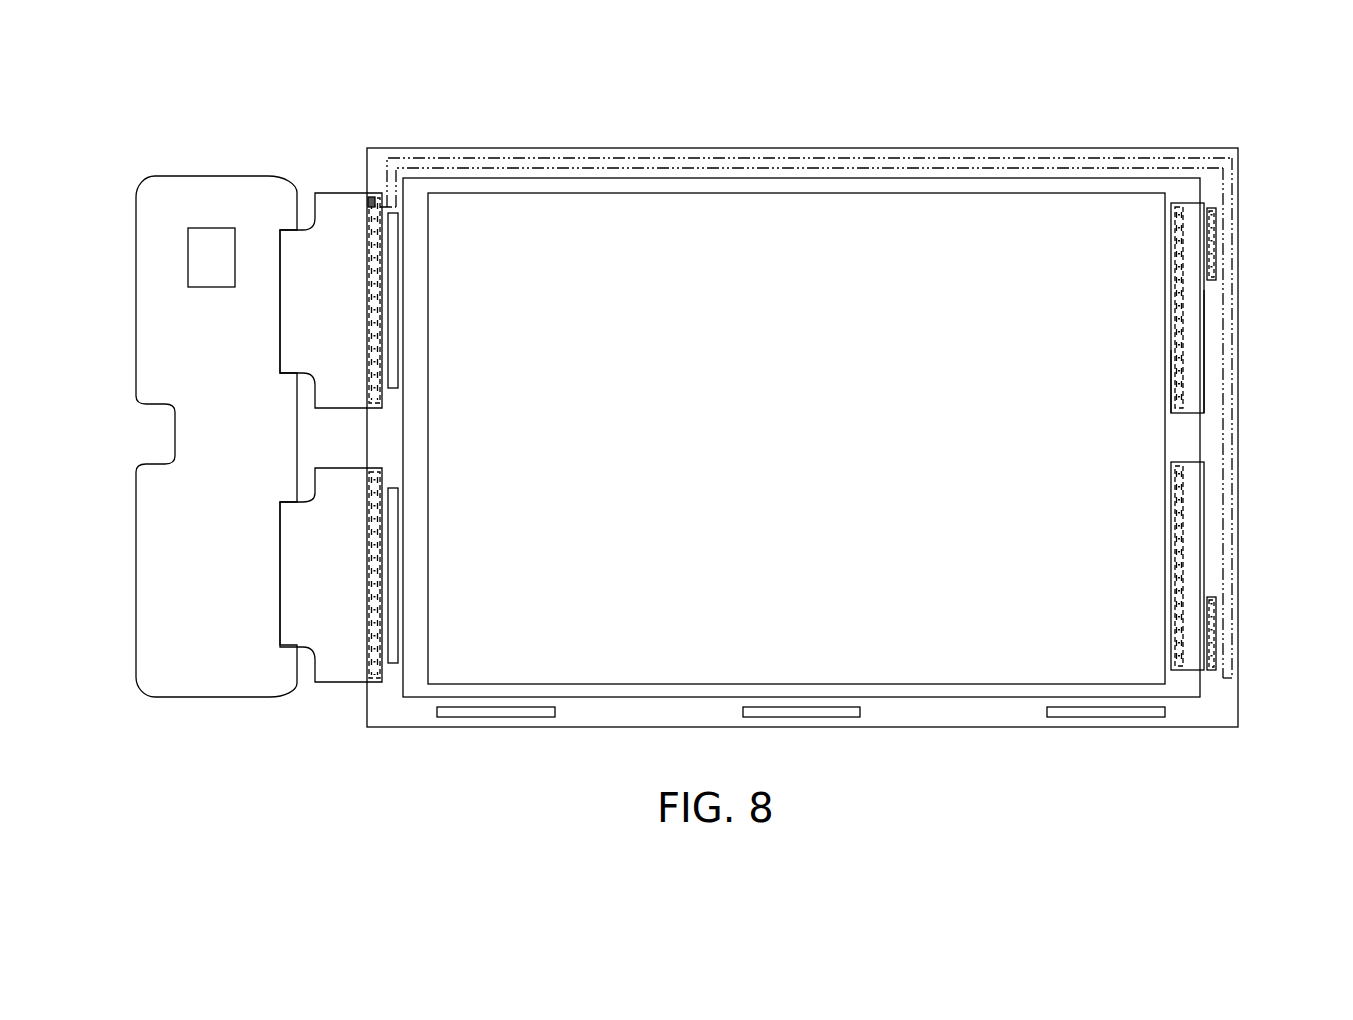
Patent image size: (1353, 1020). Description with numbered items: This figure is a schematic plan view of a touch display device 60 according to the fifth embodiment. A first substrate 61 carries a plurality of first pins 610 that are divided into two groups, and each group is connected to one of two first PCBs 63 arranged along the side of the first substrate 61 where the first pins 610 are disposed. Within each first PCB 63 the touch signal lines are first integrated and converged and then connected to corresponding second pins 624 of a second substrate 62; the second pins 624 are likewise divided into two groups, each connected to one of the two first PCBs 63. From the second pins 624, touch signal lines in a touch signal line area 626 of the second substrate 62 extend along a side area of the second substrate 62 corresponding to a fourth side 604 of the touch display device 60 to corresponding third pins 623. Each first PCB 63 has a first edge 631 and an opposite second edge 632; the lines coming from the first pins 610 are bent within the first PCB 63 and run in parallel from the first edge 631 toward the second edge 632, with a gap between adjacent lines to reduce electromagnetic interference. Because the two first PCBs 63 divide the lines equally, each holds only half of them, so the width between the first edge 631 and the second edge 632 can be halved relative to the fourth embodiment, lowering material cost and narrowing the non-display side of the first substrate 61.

The touch display device 60 is at (640, 63).
The fourth side 604 is at (548, 130).
The touch signal line area 626 is at (734, 164).
The second substrate 62 is at (1210, 437).
The first substrate 61 is at (935, 188).
The first PCB 63 is at (1193, 297).
The first pin 610 is at (1178, 201).
The second pin 624 is at (1213, 214).
The second edge 632 is at (1207, 350).
The first edge 631 is at (1180, 378).
The third pin 623 is at (370, 199).